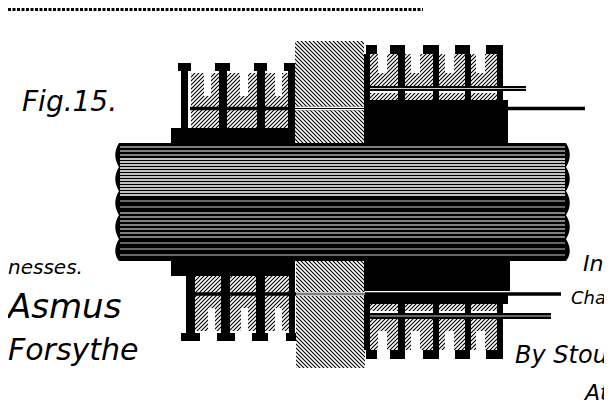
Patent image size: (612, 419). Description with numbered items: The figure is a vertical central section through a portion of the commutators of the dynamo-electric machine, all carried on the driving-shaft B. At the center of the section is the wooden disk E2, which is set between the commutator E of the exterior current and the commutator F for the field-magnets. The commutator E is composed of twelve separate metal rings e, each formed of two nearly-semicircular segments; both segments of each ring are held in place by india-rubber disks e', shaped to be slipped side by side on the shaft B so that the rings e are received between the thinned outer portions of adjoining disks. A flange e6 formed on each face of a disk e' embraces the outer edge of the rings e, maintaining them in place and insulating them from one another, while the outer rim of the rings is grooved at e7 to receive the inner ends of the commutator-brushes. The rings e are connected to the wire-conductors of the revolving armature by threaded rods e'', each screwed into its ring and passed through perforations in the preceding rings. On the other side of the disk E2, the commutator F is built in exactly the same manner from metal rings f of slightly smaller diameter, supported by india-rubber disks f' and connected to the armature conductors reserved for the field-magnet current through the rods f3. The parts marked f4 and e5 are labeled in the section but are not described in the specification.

The driving-shaft B is at (558, 165).
The commutator of the exterior current E is at (452, 203).
The wooden disk E2 is at (312, 34).
The commutator for the field-magnets F is at (236, 85).
The india-rubber disks f' is at (232, 84).
The metal rings f is at (230, 332).
The rods f3 is at (231, 68).
The base plate f4 is at (165, 262).
The metal rings e is at (460, 186).
The india-rubber disks e' is at (450, 203).
The notch e5 is at (467, 44).
The flange e6 is at (491, 60).
The grooves e7 is at (436, 53).
The rods e'' is at (457, 189).